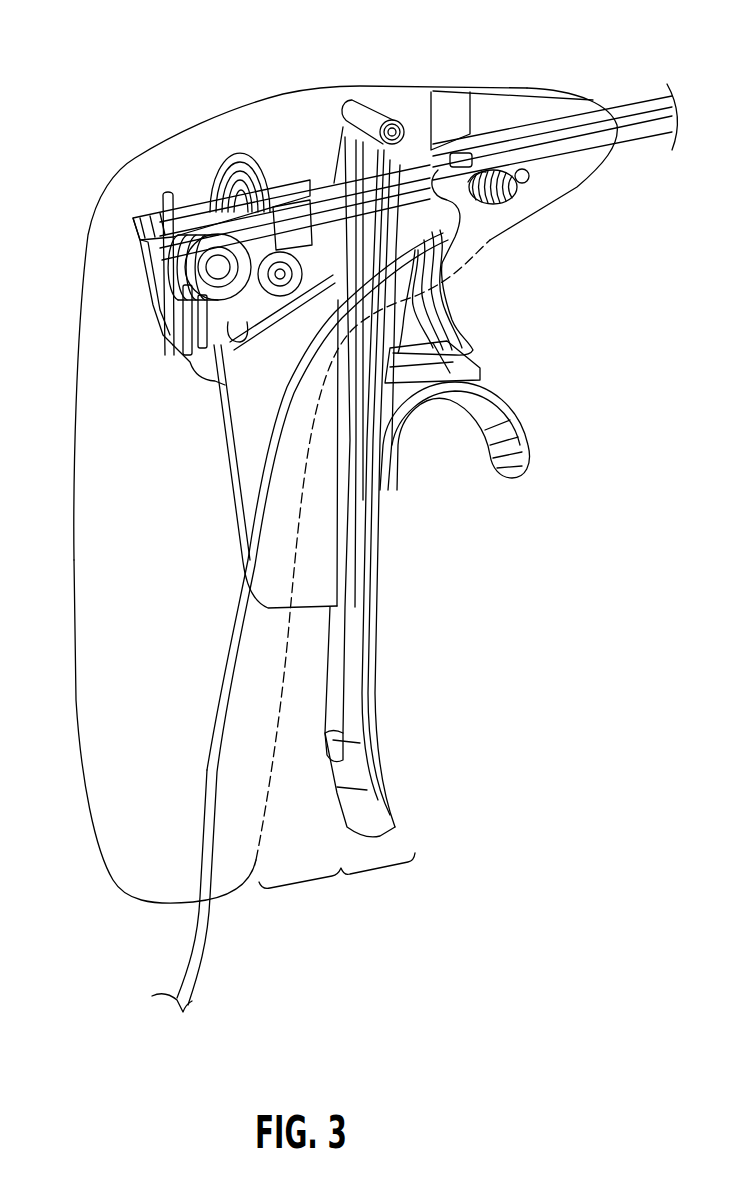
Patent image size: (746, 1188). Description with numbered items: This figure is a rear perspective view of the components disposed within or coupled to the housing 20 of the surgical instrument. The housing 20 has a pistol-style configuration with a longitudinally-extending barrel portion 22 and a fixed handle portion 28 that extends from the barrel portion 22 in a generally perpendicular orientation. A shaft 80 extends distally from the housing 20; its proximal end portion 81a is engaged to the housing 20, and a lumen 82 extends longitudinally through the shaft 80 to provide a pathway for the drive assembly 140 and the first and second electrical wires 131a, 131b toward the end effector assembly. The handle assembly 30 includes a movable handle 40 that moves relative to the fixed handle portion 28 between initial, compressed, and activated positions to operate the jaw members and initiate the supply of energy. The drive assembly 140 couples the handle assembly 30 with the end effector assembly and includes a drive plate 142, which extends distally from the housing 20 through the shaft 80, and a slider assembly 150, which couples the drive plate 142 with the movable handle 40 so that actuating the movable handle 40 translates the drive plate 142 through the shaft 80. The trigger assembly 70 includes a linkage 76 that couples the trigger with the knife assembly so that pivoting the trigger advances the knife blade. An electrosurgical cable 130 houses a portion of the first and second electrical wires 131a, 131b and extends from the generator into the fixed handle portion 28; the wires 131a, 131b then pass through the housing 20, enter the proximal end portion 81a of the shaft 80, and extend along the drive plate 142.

The housing 20 is at (100, 197).
The barrel portion 22 is at (522, 90).
The fixed handle portion 28 is at (120, 826).
The handle assembly 30 is at (337, 617).
The movable handle 40 is at (552, 425).
The trigger assembly 70 is at (465, 292).
The linkage 76 is at (230, 145).
The shaft 80 is at (641, 133).
The proximal end portion 81a is at (474, 165).
The lumen 82 is at (432, 115).
The electrosurgical cable 130 is at (205, 953).
The first electrical wire 131a is at (214, 807).
The second electrical wire 131b is at (205, 777).
The drive assembly 140 is at (181, 190).
The drive plate 142 is at (207, 215).
The slider assembly 150 is at (155, 338).